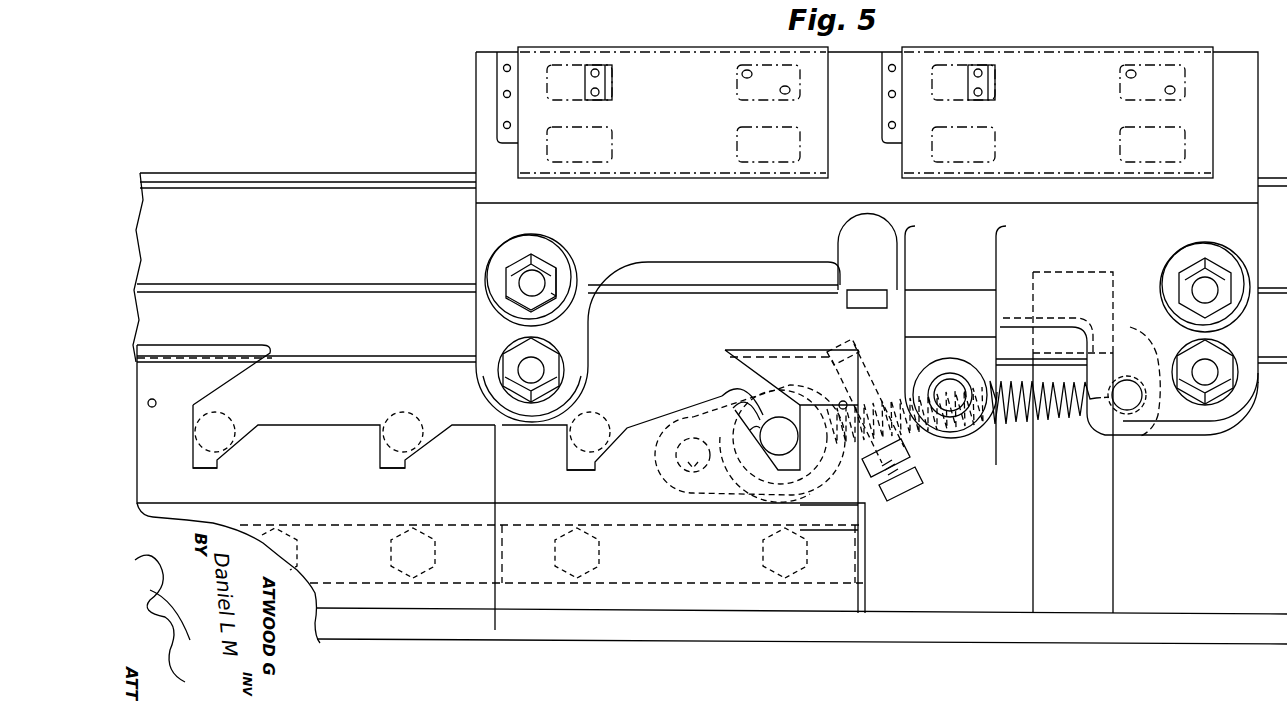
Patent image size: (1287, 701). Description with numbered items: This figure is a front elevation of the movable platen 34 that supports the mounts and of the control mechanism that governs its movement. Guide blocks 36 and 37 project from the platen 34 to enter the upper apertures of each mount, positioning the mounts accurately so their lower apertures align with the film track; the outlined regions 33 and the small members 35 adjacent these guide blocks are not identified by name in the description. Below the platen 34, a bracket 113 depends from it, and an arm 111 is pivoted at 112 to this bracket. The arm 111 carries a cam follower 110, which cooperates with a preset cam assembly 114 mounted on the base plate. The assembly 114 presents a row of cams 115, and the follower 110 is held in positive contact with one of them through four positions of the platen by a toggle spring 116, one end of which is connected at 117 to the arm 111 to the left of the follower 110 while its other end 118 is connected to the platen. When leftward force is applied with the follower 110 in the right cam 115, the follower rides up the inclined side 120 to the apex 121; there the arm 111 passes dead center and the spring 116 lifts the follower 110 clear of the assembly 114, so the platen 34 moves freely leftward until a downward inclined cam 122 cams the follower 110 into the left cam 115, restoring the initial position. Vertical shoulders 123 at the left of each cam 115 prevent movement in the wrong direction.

The mounting plate panels 33 is at (743, 65).
The movable platen 34 is at (497, 128).
The clip 35 is at (612, 77).
The guide block 36 is at (598, 92).
The guide block 37 is at (735, 98).
The cam follower 110 is at (742, 410).
The arm 111 is at (920, 363).
The pivot 112 is at (952, 390).
The bracket 113 is at (983, 347).
The preset cam assembly 114 is at (845, 495).
The cam 115 is at (247, 430).
The toggle spring 116 is at (998, 416).
The spring end connection 117 is at (668, 479).
The other end of toggle spring 118 is at (1127, 416).
The inclined side 120 is at (750, 430).
The apex 121 is at (726, 406).
The downward inclined cam 122 is at (240, 371).
The vertical shoulders 123 is at (196, 452).